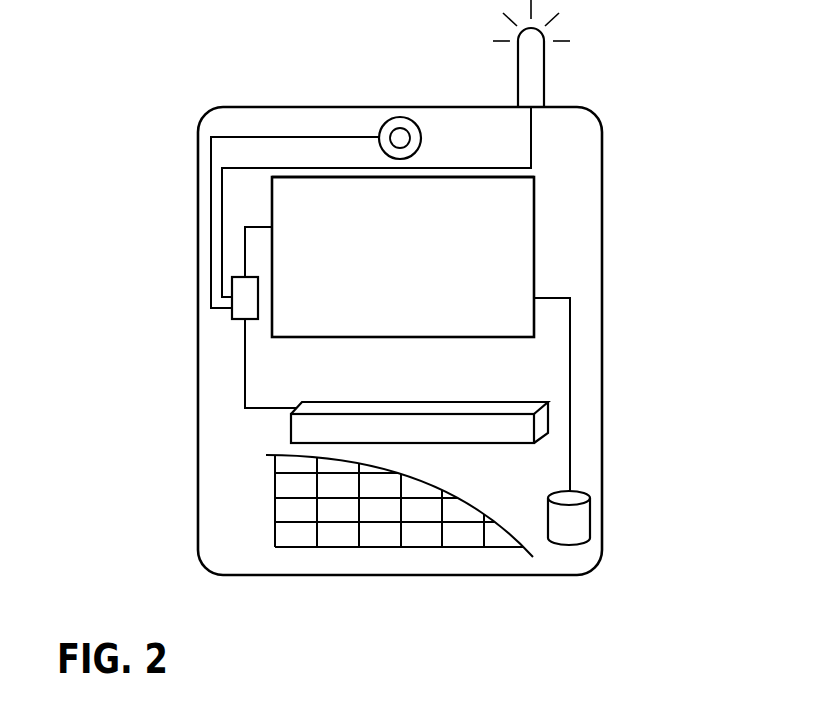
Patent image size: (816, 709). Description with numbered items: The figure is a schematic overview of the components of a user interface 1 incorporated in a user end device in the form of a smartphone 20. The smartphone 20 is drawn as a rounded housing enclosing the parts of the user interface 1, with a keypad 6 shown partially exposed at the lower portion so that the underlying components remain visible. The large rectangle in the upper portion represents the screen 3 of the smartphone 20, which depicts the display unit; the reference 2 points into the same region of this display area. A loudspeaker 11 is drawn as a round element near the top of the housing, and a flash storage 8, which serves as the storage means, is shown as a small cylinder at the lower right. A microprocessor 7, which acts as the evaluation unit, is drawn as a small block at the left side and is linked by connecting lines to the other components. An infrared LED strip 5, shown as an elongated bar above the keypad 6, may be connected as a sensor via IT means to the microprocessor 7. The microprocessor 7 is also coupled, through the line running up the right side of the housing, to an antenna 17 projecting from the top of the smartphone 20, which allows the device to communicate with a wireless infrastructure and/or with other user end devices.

The user interface 1 is at (166, 185).
The display 2 is at (320, 220).
The screen 3 is at (448, 160).
The infrared LED strip 5 is at (291, 425).
The keypad 6 is at (380, 512).
The microprocessor 7 is at (233, 287).
The flash storage 8 is at (590, 523).
The loudspeaker 11 is at (400, 116).
The antenna 17 is at (545, 66).
The smartphone 20 is at (648, 98).